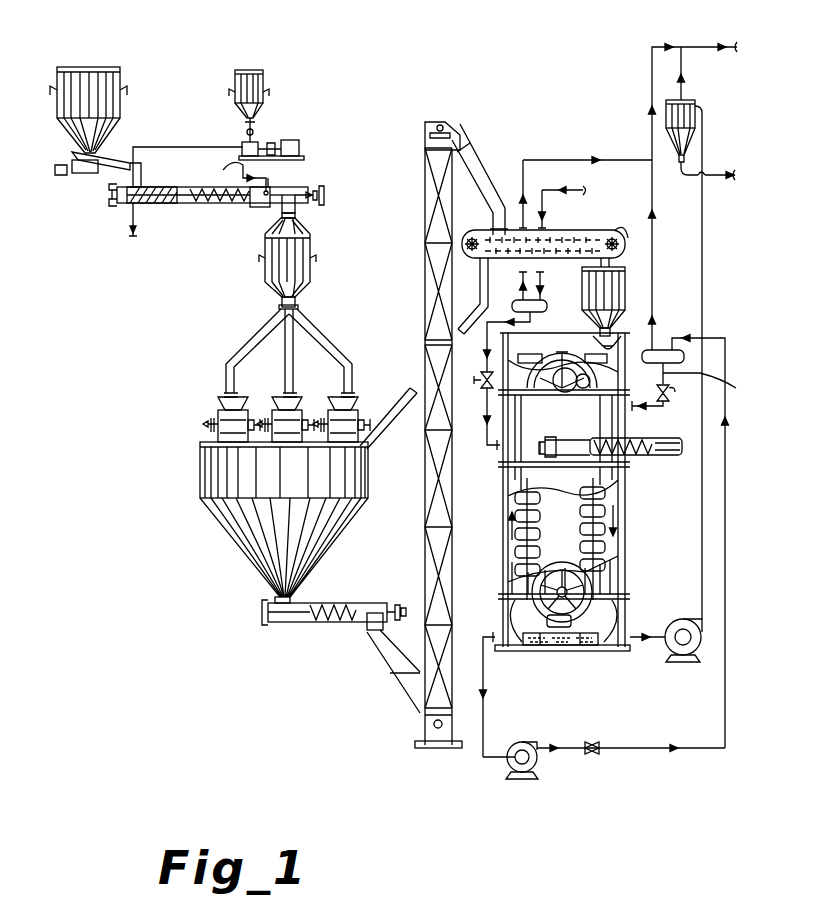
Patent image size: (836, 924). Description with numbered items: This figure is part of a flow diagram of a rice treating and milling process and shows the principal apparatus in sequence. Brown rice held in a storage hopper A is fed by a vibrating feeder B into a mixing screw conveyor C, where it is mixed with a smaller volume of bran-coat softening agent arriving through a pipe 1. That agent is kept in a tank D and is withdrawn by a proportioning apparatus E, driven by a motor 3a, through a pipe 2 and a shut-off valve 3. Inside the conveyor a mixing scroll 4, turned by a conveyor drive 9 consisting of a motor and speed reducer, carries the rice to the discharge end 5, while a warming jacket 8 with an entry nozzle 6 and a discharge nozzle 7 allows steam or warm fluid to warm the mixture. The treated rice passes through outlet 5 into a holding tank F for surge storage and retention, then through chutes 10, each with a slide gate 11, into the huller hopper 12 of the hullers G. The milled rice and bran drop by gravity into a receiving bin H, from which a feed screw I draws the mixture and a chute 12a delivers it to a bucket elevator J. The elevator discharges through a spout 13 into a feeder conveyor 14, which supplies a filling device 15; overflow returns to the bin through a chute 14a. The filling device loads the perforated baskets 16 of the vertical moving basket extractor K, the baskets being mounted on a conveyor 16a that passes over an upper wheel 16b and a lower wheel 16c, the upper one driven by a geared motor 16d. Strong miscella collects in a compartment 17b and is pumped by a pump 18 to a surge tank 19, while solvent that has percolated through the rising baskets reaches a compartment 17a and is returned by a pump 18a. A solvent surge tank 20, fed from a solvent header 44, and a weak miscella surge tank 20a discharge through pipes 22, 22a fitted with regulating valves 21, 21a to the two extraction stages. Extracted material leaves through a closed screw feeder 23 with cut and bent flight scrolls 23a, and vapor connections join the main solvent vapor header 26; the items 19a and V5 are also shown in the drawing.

The storage hopper A is at (90, 66).
The vibrating feeder B is at (82, 176).
The pipe 1 is at (165, 147).
The pipe 2 is at (253, 122).
The shut-off valve 3 is at (254, 132).
The motor 3a is at (300, 147).
The mixing scroll 4 is at (223, 205).
The discharge end 5 is at (297, 206).
The entry nozzle 6 is at (231, 177).
The discharge nozzle 7 is at (130, 224).
The warming jacket 8 is at (150, 206).
The conveyor drive 9 is at (325, 195).
The mixing screw conveyor C is at (208, 213).
The tank D is at (255, 68).
The proportioning apparatus E is at (243, 146).
The holding tank F is at (266, 262).
The chutes 10 is at (287, 362).
The slide gate 11 is at (238, 400).
The huller hopper 12 is at (228, 400).
The hullers G is at (226, 401).
The receiving bin H is at (200, 470).
The feed screw I is at (290, 626).
The chute 12a is at (386, 668).
The bucket elevator J is at (425, 140).
The spout 13 is at (482, 153).
The feeder conveyor 14 is at (578, 230).
The chute 14a is at (468, 318).
The filling device 15 is at (625, 283).
The baskets 16 is at (598, 338).
The conveyor 16a is at (540, 527).
The upper wheel 16b is at (549, 356).
The lower wheel 16c is at (563, 604).
The geared motor 16d is at (487, 364).
The compartment 17a is at (550, 645).
The compartment 17b is at (578, 645).
The pump 18 is at (699, 664).
The pump 18a is at (511, 768).
The surge tank 19 is at (692, 100).
The cyclone discharge line 19a is at (712, 174).
The solvent surge tank 20 is at (542, 296).
The weak miscella surge tank 20a is at (663, 348).
The regulating valve 21 is at (482, 390).
The regulating valve 21a is at (672, 397).
The discharge pipe 22 is at (486, 439).
The discharge pipe 22a is at (716, 385).
The closed screw feeder 23 is at (656, 458).
The cut and bent flight scrolls 23a is at (650, 440).
The main solvent vapor header 26 is at (692, 47).
The solvent header 44 is at (587, 190).
The solvent extractor K is at (501, 546).
The valve V5 is at (597, 757).